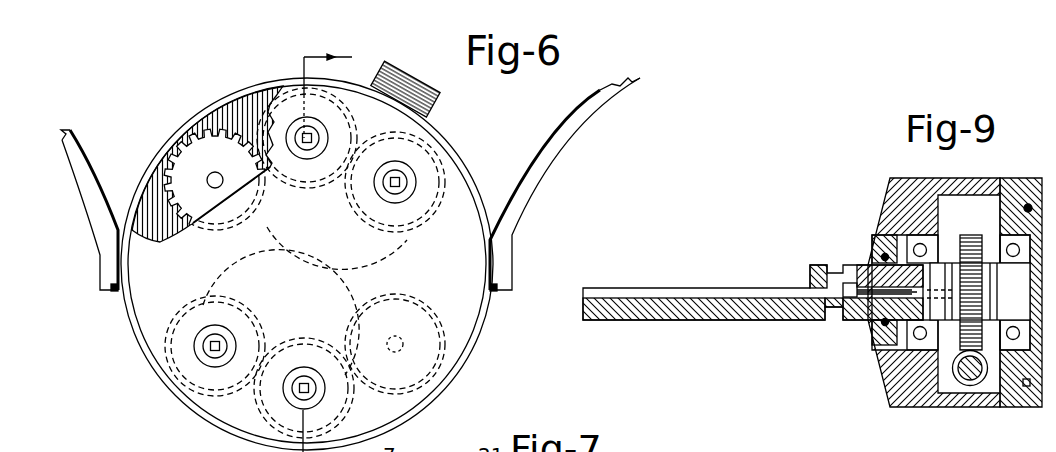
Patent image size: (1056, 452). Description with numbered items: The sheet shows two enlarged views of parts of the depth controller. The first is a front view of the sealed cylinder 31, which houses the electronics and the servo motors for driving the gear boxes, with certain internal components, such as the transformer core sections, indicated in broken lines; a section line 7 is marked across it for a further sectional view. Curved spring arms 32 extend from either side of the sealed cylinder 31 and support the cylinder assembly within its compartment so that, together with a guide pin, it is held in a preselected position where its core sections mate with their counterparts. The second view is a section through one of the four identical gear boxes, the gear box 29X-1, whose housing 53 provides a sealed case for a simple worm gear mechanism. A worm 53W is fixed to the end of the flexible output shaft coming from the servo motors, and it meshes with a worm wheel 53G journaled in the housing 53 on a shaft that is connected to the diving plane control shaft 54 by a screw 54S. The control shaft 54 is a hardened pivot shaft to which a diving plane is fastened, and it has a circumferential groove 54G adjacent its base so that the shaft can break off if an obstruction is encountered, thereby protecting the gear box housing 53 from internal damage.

In FIG. 6, the section line 7- 7 is at (333, 238).
In FIG. 6, the sealed cylinder 31 is at (457, 367).
In FIG. 6, the curved spring arms 32 is at (93, 153).
In FIG. 9, the housing 53 is at (917, 177).
In FIG. 9, the gear box 29X-1 is at (968, 182).
In FIG. 9, the worm wheel 53G is at (973, 237).
In FIG. 9, the worm 53W is at (968, 386).
In FIG. 9, the diving plane control shaft 54 is at (630, 320).
In FIG. 9, the circumferential groove 54G is at (836, 266).
In FIG. 9, the screw 54S is at (838, 267).